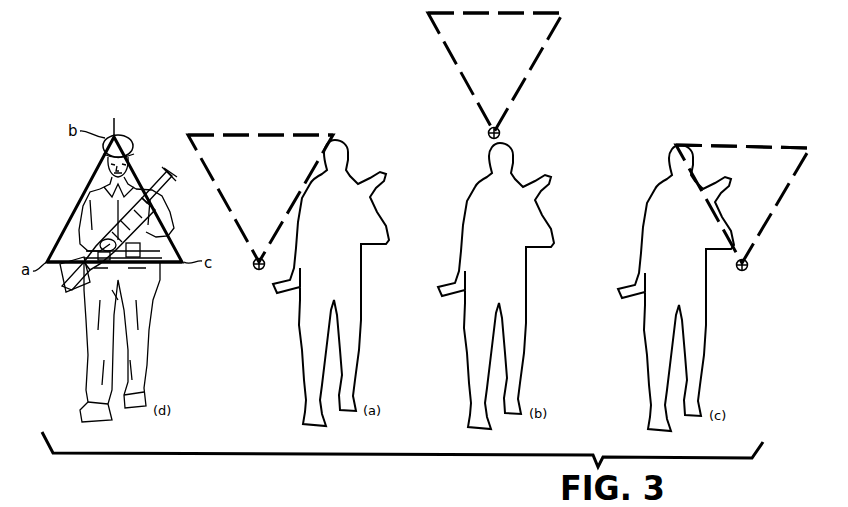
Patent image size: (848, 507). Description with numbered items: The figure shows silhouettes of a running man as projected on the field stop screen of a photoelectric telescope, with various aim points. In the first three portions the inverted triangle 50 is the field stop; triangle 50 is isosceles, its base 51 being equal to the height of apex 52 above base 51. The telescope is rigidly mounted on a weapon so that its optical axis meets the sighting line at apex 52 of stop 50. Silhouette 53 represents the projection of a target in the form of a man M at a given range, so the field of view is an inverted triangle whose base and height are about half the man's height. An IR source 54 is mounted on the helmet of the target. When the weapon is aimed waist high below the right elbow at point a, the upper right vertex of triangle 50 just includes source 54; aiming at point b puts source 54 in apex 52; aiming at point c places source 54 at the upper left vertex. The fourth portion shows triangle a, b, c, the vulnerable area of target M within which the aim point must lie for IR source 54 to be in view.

The inverted triangle field stop 50 is at (61, 248).
The base 51 is at (166, 268).
The apex 52 is at (252, 272).
The silhouette 53 is at (358, 322).
The IR source 54 is at (118, 136).
The man M is at (150, 320).